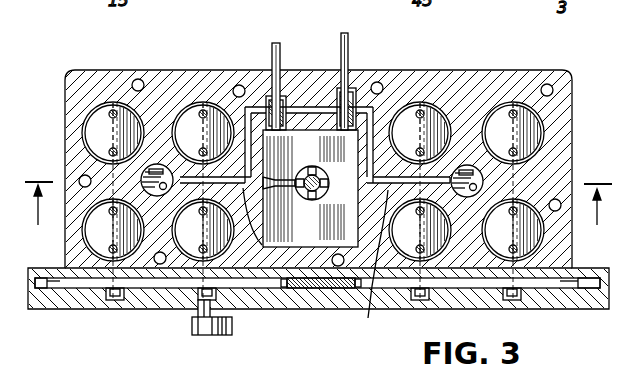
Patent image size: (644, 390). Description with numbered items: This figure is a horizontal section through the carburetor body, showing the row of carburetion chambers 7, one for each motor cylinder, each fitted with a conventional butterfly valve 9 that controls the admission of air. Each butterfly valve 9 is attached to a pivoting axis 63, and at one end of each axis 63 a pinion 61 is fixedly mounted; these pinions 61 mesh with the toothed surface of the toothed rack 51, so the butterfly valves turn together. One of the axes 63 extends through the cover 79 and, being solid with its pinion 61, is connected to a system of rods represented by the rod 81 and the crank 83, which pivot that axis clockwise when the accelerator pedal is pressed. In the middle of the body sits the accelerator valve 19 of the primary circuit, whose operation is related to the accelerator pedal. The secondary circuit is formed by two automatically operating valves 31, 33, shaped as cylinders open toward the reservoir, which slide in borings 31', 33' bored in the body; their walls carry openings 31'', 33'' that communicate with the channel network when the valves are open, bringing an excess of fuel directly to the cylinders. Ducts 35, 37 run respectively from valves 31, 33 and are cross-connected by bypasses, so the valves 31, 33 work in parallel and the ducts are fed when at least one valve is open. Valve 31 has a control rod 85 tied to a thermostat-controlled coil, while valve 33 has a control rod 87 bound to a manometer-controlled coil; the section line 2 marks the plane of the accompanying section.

The carburetion chamber 7 is at (455, 110).
The butterfly valve 9 is at (420, 100).
The pivoting axis 63 is at (171, 69).
The automatic valve 31 is at (293, 83).
The boring 31' is at (256, 98).
The opening 31'' is at (215, 110).
The automatic valve 33 is at (376, 89).
The boring 33' is at (348, 96).
The opening 33'' is at (408, 106).
The control rod 85 is at (278, 53).
The control rod 87 is at (348, 35).
The accelerator valve 19 is at (328, 181).
The duct 35 is at (268, 224).
The duct 37 is at (371, 264).
The toothed rack 51 is at (62, 283).
The pinion 61 is at (182, 282).
The cover 79 is at (300, 309).
The rod 81 is at (198, 335).
The crank 83 is at (226, 333).
The section line 2- 2 is at (318, 191).